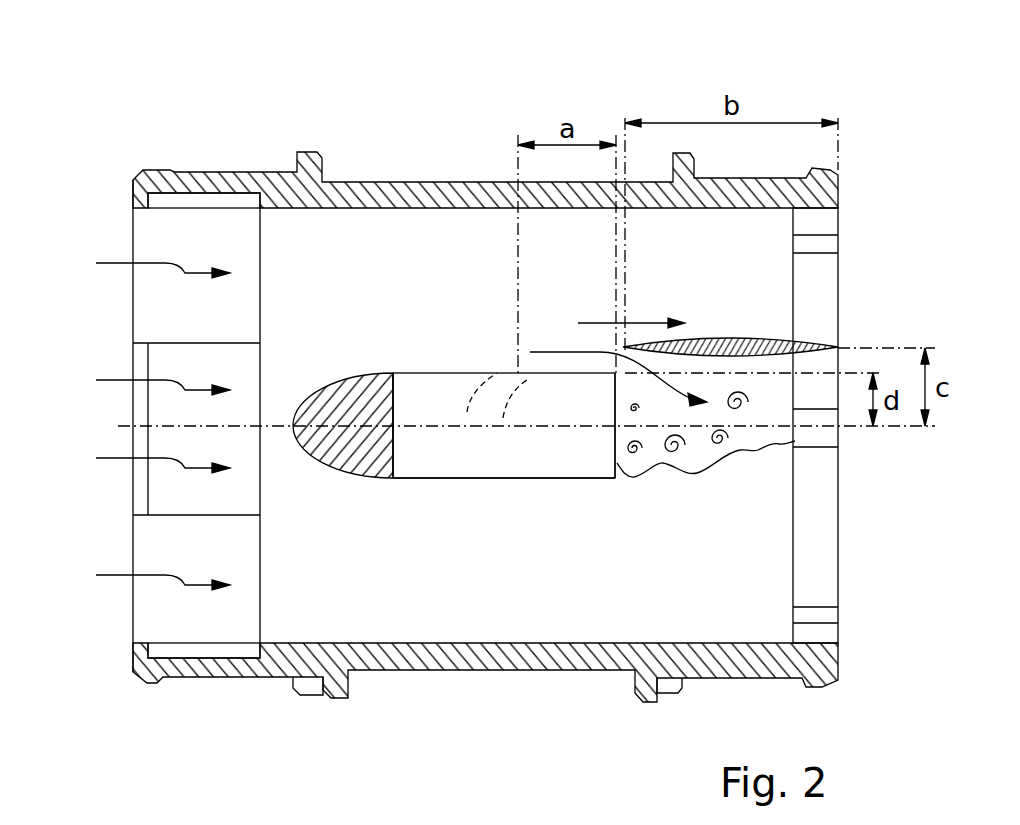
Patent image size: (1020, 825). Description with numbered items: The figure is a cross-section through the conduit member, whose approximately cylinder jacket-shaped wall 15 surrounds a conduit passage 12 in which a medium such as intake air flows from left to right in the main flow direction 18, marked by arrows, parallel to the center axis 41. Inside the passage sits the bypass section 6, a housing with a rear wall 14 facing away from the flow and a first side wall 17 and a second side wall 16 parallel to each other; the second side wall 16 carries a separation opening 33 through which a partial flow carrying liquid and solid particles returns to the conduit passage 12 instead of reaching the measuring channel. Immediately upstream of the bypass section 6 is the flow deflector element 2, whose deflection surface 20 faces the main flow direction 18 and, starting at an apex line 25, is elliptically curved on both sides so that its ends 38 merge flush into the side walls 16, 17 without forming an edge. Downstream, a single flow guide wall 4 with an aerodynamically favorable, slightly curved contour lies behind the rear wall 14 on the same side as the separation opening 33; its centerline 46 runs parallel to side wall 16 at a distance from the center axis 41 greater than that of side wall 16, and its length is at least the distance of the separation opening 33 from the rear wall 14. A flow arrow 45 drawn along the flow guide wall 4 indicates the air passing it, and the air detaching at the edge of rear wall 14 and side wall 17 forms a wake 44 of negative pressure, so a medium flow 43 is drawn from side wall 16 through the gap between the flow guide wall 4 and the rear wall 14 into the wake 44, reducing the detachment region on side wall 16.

The cylinder jacket-shaped wall 15 is at (356, 188).
The main flow direction 18 is at (147, 413).
The apex line 25 is at (293, 420).
The flow deflector element 2 is at (358, 392).
The ends of deflection surface 38 is at (390, 382).
The second side wall 16 is at (442, 371).
The separation opening 33 is at (503, 372).
The medium flow 43 is at (553, 351).
The flow arrow 45 is at (645, 322).
The flow guide wall 4 is at (737, 337).
The centerline of flow guide wall 46 is at (876, 348).
The deflection surface 20 is at (330, 466).
The bypass section 6 is at (430, 462).
The first side wall 17 is at (478, 481).
The rear wall 14 is at (617, 466).
The wake 44 is at (741, 452).
The center axis 41 is at (818, 428).
The conduit passage 12 is at (541, 612).